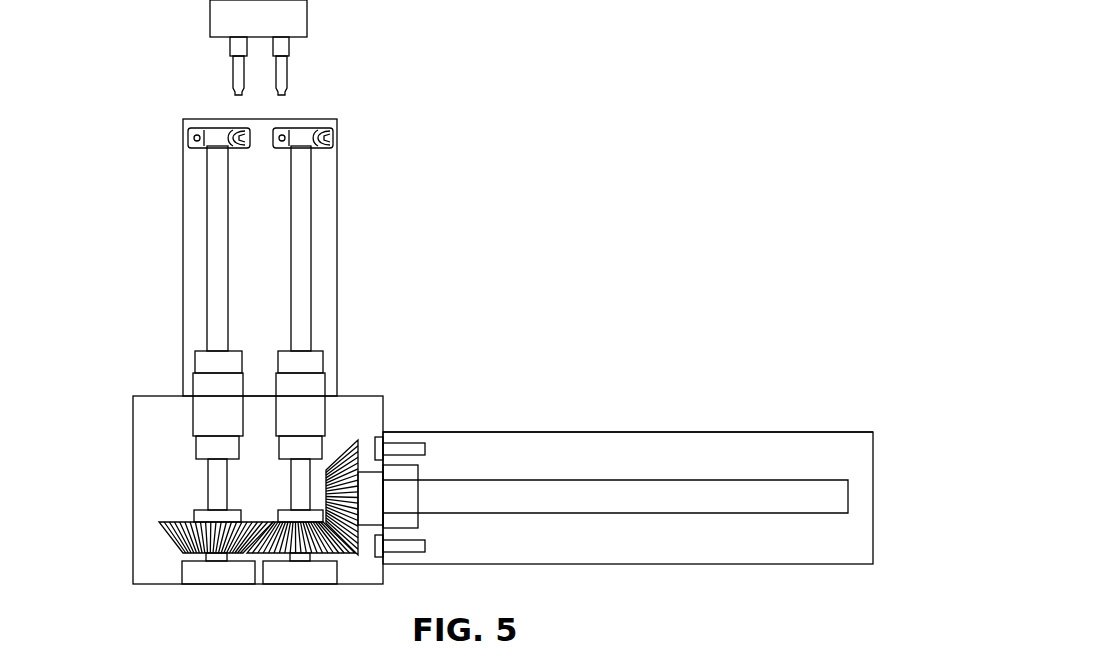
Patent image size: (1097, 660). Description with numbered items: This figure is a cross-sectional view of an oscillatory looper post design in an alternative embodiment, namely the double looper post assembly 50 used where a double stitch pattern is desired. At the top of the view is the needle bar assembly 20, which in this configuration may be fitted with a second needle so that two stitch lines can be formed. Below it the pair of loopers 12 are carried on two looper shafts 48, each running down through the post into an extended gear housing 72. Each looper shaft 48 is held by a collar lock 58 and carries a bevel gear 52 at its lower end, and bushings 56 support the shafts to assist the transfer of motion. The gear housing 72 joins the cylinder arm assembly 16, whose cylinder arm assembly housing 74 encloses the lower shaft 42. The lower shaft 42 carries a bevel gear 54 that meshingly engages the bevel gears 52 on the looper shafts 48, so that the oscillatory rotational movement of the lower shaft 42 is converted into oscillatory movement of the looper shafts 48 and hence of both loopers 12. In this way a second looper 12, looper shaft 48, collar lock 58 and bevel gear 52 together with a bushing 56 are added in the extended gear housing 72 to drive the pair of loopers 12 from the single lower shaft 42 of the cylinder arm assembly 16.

The oscillatory butterfly looper 12 is at (188, 133).
The cylinder arm assembly 16 is at (693, 432).
The needle bar assembly 20 is at (210, 12).
The lower shaft 42 is at (633, 495).
The looper shaft 48 is at (207, 244).
The double looper post assembly 50 is at (393, 254).
The bevel gear 52 is at (175, 538).
The bevel gear 54 is at (350, 450).
The bushing 56 is at (200, 572).
The collar lock 58 is at (195, 362).
The gear housing 72 is at (133, 497).
The cylinder arm assembly housing 74 is at (595, 452).